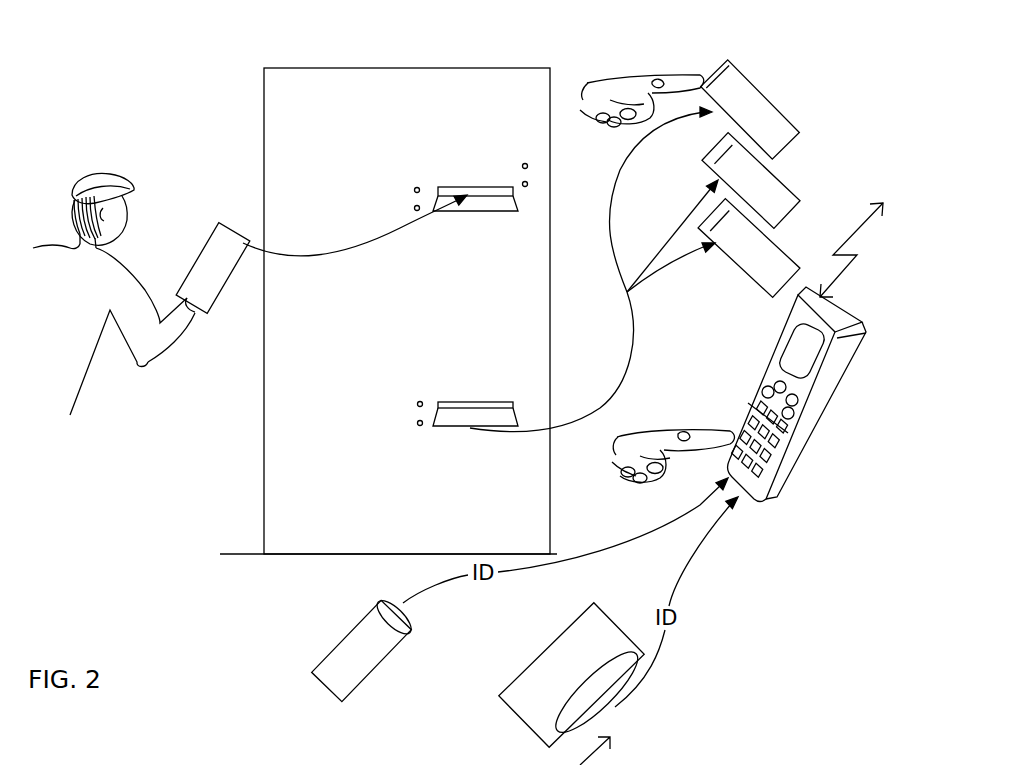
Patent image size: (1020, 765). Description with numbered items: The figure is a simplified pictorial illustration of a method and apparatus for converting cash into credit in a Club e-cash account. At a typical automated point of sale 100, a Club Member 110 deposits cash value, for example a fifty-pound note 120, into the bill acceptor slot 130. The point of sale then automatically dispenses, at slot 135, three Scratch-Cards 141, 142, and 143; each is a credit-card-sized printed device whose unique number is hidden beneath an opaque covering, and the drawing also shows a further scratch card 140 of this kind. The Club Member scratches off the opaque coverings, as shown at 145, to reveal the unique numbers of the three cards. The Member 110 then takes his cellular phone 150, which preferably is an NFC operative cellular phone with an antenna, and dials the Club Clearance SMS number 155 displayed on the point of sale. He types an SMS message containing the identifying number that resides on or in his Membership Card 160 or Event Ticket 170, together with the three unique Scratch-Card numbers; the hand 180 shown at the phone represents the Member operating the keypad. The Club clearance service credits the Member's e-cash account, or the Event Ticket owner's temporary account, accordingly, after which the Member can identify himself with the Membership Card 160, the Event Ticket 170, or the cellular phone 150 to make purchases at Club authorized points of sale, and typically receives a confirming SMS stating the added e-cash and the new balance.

The automated point of sale 100 is at (264, 68).
The Club Member 110 is at (137, 364).
The £50.00 note 120 is at (238, 224).
The bill acceptor slot 130 is at (505, 183).
The slot 135 is at (440, 436).
The scratch card 140 is at (800, 132).
The Scratch-Card 141 is at (727, 58).
The Scratch-Card 142 is at (814, 250).
The Scratch-Card 143 is at (703, 158).
The scratched opaque covering 145 is at (747, 76).
The cellular phone 150 is at (778, 335).
The Club Clearance SMS number 155 is at (323, 332).
The Membership Card 160 is at (596, 602).
The Event Ticket 170 is at (380, 665).
The user hand 180 is at (745, 420).